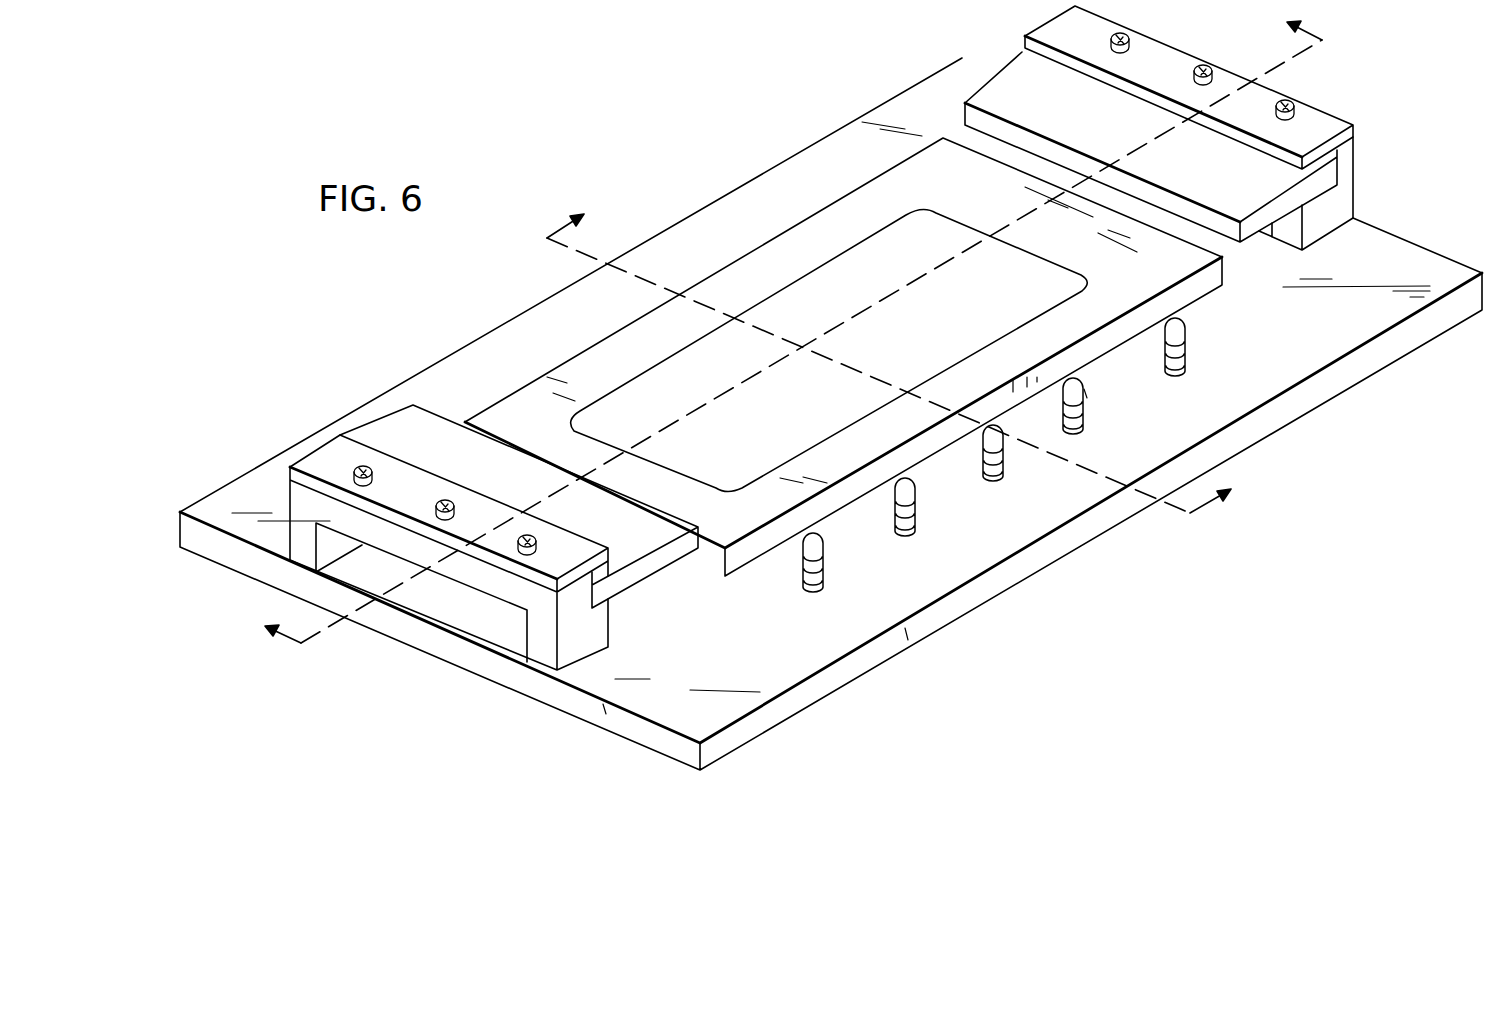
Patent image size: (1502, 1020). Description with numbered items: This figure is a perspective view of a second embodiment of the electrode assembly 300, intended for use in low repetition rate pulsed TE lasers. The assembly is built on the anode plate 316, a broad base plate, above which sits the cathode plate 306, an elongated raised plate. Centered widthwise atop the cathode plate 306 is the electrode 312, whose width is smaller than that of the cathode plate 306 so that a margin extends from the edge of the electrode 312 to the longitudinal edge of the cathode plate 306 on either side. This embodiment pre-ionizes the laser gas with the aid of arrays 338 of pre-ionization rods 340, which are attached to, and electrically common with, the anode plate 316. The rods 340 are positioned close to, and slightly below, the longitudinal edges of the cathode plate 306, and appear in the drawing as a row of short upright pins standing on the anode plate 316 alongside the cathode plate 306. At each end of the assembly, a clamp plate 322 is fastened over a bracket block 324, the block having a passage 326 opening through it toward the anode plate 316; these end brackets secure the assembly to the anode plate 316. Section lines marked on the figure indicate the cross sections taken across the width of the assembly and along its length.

The workpiece holding fixture assembly 300 is at (1156, 667).
The cathode plate 306 is at (876, 186).
The electrode 312 is at (930, 228).
The anode plate 316 is at (775, 719).
The clamp plate 322 is at (640, 535).
The clamp bracket block 324 is at (289, 491).
The slot / passage in bracket 326 is at (483, 624).
The arrays of pre-ionization rods 338 is at (1216, 340).
The pre-ionization rods 340 is at (1070, 435).